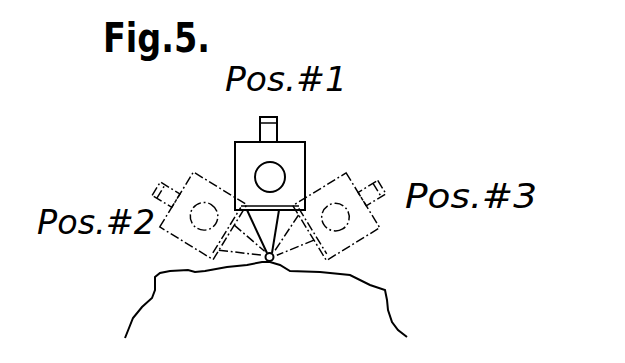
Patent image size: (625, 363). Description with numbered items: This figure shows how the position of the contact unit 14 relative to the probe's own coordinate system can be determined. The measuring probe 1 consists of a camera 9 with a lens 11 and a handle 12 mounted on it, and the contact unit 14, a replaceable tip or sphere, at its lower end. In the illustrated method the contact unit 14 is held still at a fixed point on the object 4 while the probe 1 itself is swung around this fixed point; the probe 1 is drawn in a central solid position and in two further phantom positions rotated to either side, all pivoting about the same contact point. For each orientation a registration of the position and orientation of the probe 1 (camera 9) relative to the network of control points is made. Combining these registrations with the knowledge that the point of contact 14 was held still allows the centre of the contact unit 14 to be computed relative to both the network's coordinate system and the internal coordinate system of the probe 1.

The measuring probe 1 is at (268, 136).
The camera 9 is at (296, 172).
The lens 11 is at (252, 171).
The handle 12 is at (262, 121).
The contact unit 14 is at (276, 258).
The object 4 is at (367, 312).